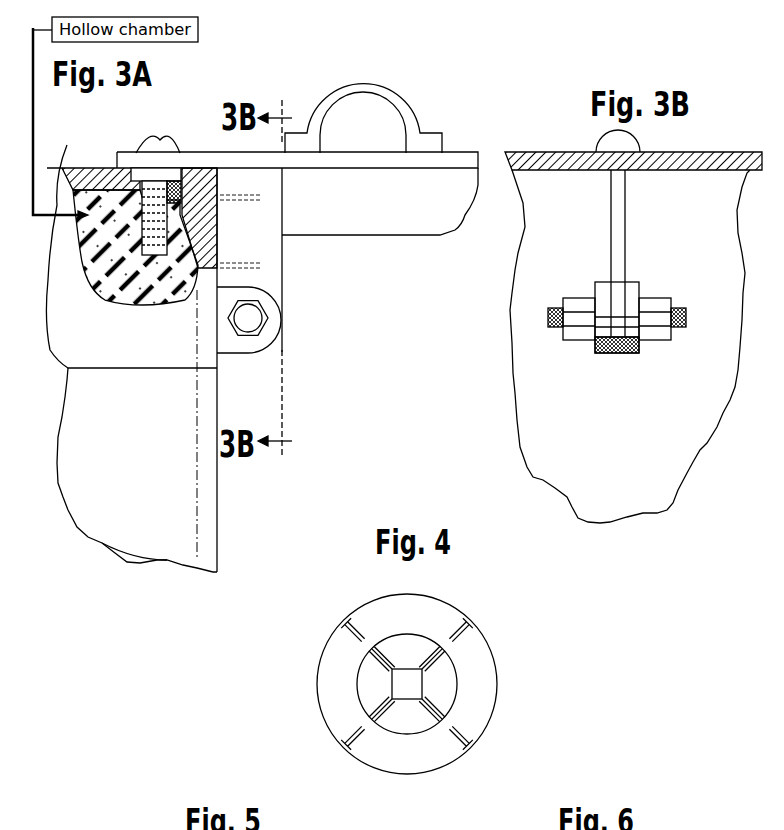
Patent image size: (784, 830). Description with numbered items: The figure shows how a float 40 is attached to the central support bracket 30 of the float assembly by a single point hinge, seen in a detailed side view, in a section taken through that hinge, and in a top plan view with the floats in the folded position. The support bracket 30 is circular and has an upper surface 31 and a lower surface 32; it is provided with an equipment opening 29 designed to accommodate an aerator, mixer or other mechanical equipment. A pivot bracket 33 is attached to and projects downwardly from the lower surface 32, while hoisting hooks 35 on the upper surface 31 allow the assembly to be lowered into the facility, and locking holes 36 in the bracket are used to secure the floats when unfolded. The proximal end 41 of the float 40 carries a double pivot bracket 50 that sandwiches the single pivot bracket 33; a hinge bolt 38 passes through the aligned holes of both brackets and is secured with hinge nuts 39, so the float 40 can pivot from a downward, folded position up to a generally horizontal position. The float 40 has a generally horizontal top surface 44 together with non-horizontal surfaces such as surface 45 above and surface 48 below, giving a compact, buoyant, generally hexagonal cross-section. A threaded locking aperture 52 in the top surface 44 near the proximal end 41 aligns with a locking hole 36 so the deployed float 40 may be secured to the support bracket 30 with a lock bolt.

In FIG. 4, the equipment opening 29 is at (456, 678).
In FIG. 3B, the central support bracket 30 is at (740, 140).
In FIG. 4, the central support bracket 30 is at (458, 612).
In FIG. 3A, the upper surface 31 is at (198, 152).
In FIG. 3B, the upper surface 31 is at (528, 152).
In FIG. 4, the upper surface 31 is at (490, 700).
In FIG. 3A, the lower surface 32 is at (116, 166).
In FIG. 3B, the lower surface 32 is at (690, 170).
In FIG. 3A, the pivot bracket 33 is at (284, 258).
In FIG. 3B, the pivot bracket 33 is at (626, 245).
In FIG. 4, the hoisting hooks 35 is at (351, 620).
In FIG. 3A, the locking holes 36 is at (178, 150).
In FIG. 4, the locking holes 36 is at (410, 605).
In FIG. 3A, the hinge bolt 38 is at (250, 330).
In FIG. 3B, the hinge bolt 38 is at (688, 318).
In FIG. 3B, the hinge nuts 39 is at (586, 333).
In FIG. 3A, the float 40 is at (90, 490).
In FIG. 3A, the proximal end 41 is at (212, 522).
In FIG. 4, the proximal end 41 is at (413, 646).
In FIG. 3A, the top surface 44 is at (68, 182).
In FIG. 3A, the non-horizontal surface 45 is at (63, 346).
In FIG. 3A, the non-horizontal lower surface 48 is at (118, 530).
In FIG. 3A, the double pivot bracket 50 is at (266, 332).
In FIG. 3B, the double pivot bracket 50 is at (632, 355).
In FIG. 3B, the threaded locking aperture 52 is at (602, 355).